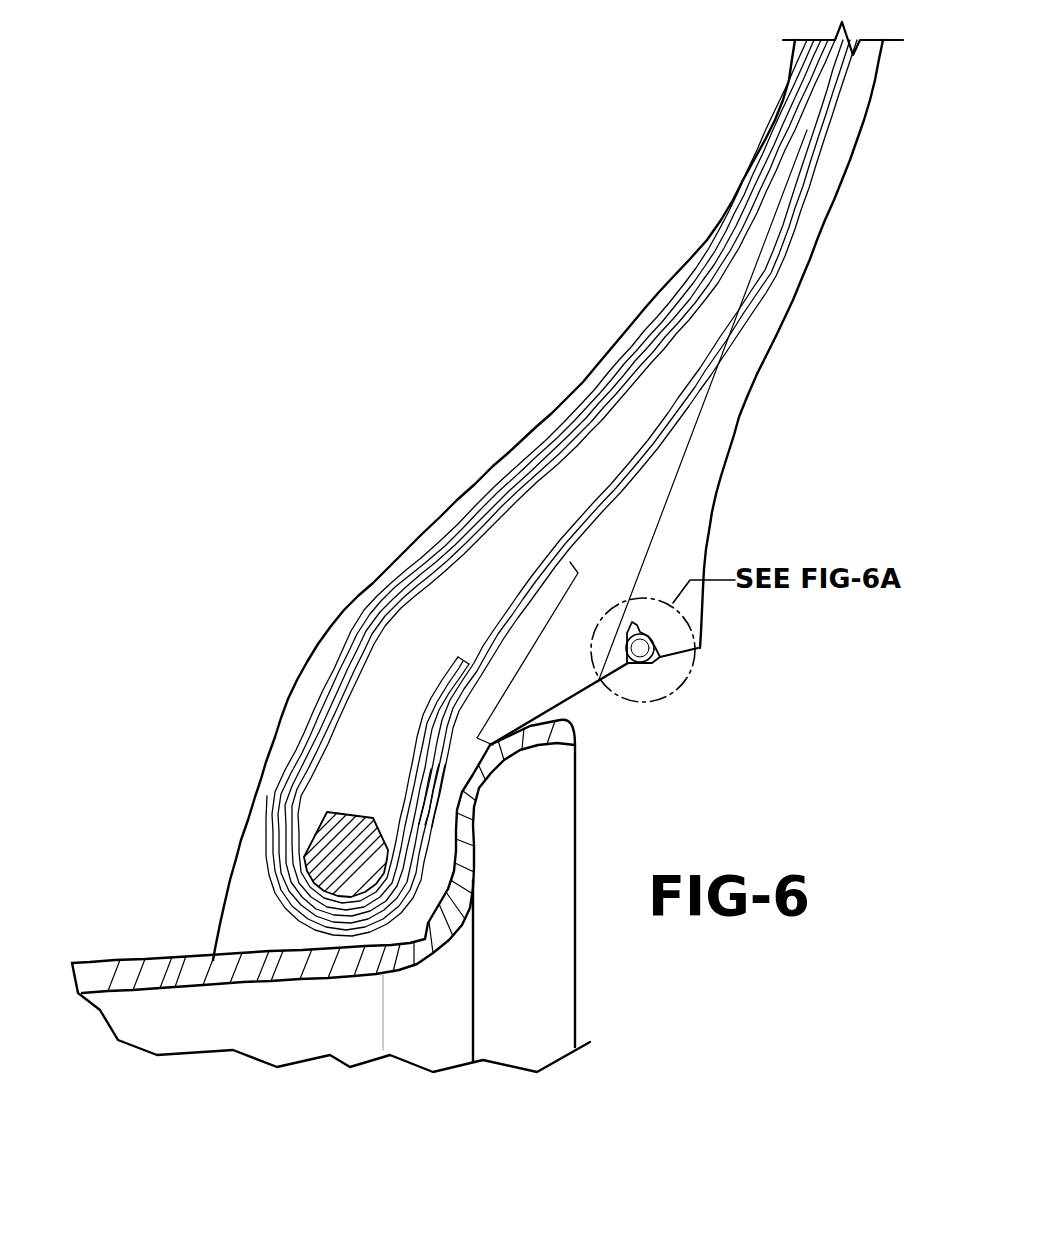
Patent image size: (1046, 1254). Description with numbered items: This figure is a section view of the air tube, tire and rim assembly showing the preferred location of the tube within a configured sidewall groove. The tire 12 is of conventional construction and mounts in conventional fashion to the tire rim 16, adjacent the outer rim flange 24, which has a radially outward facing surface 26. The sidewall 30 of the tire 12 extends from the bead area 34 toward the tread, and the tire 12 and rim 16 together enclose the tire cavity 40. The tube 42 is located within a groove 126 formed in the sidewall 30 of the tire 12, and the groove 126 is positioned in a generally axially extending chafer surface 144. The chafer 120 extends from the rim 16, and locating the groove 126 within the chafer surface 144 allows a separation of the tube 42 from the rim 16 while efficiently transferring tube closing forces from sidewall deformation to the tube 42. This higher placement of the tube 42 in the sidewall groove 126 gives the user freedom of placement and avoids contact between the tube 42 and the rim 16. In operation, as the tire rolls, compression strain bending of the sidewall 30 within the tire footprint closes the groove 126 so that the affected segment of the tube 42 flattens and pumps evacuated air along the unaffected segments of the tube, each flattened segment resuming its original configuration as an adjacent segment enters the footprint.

The tire 12 is at (826, 270).
The tire rim 16 is at (155, 953).
The outer rim flange 24 is at (467, 828).
The radially outward facing surface 26 is at (473, 777).
The sidewall 30 is at (817, 180).
The bead area 34 is at (330, 846).
The tire cavity 40 is at (165, 863).
The tube 42 is at (652, 678).
The chafer 120 is at (690, 510).
The groove 126 is at (676, 671).
The chafer surface 144 is at (578, 698).